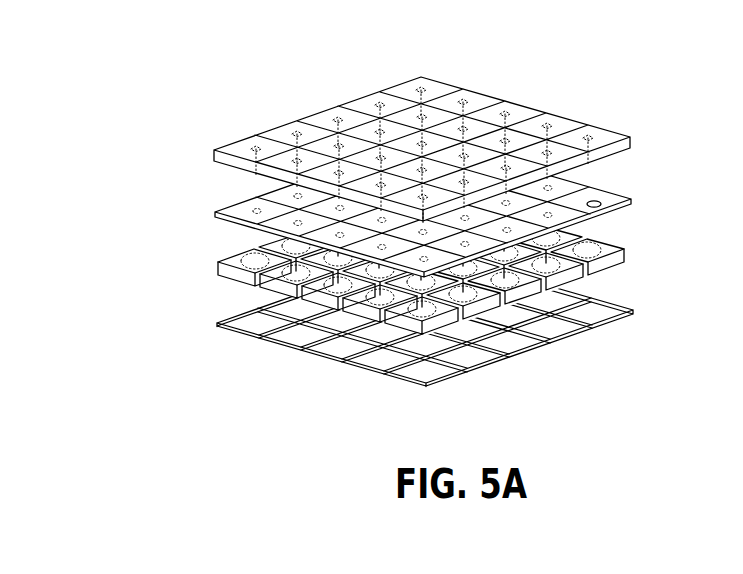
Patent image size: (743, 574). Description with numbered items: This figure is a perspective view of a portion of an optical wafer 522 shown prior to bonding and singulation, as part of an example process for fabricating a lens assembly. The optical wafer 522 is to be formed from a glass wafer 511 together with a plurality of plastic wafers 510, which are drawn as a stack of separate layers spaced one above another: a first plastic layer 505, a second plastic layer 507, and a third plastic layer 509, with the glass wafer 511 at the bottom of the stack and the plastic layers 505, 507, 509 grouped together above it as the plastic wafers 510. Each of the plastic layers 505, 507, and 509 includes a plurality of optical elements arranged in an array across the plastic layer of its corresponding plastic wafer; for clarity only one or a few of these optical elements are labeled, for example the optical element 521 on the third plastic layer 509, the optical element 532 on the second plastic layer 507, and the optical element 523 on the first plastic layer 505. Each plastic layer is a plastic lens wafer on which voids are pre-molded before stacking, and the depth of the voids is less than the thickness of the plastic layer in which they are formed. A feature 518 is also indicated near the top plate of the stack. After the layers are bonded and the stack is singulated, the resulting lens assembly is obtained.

The optical wafer 522 is at (668, 31).
The plastic wafers 510 is at (663, 134).
The third plastic layer 509 is at (214, 151).
The optical element 521 is at (260, 170).
The pins 518 is at (452, 110).
The second plastic layer 507 is at (215, 211).
The optical element 532 is at (613, 198).
The first plastic layer 505 is at (218, 263).
The glass wafer 511 is at (312, 356).
The optical element 523 is at (265, 323).